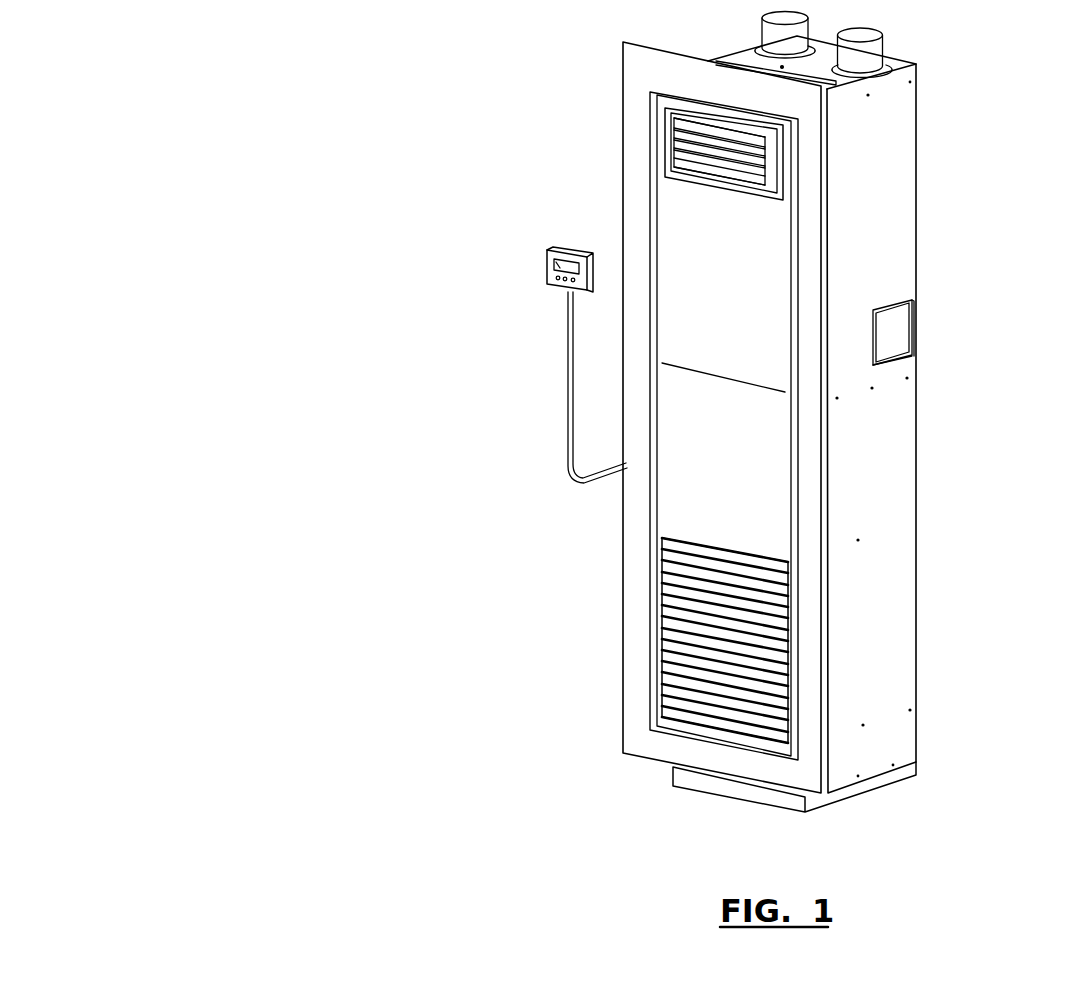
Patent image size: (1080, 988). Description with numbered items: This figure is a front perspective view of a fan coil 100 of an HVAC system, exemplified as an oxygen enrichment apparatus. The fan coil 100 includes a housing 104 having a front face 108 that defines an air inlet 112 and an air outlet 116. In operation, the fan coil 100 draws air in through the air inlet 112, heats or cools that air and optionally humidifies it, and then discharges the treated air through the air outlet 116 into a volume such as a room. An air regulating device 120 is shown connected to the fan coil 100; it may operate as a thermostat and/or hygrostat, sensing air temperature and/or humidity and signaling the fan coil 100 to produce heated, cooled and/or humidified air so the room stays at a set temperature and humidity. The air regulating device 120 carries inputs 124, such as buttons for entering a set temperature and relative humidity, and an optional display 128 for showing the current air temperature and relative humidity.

The fan coil 100 is at (316, 111).
The housing 104 is at (898, 192).
The front face 108 is at (670, 218).
The air inlet 112 is at (670, 678).
The air outlet 116 is at (688, 160).
The air regulating device 120 is at (552, 250).
The inputs 124 is at (548, 278).
The display 128 is at (548, 253).